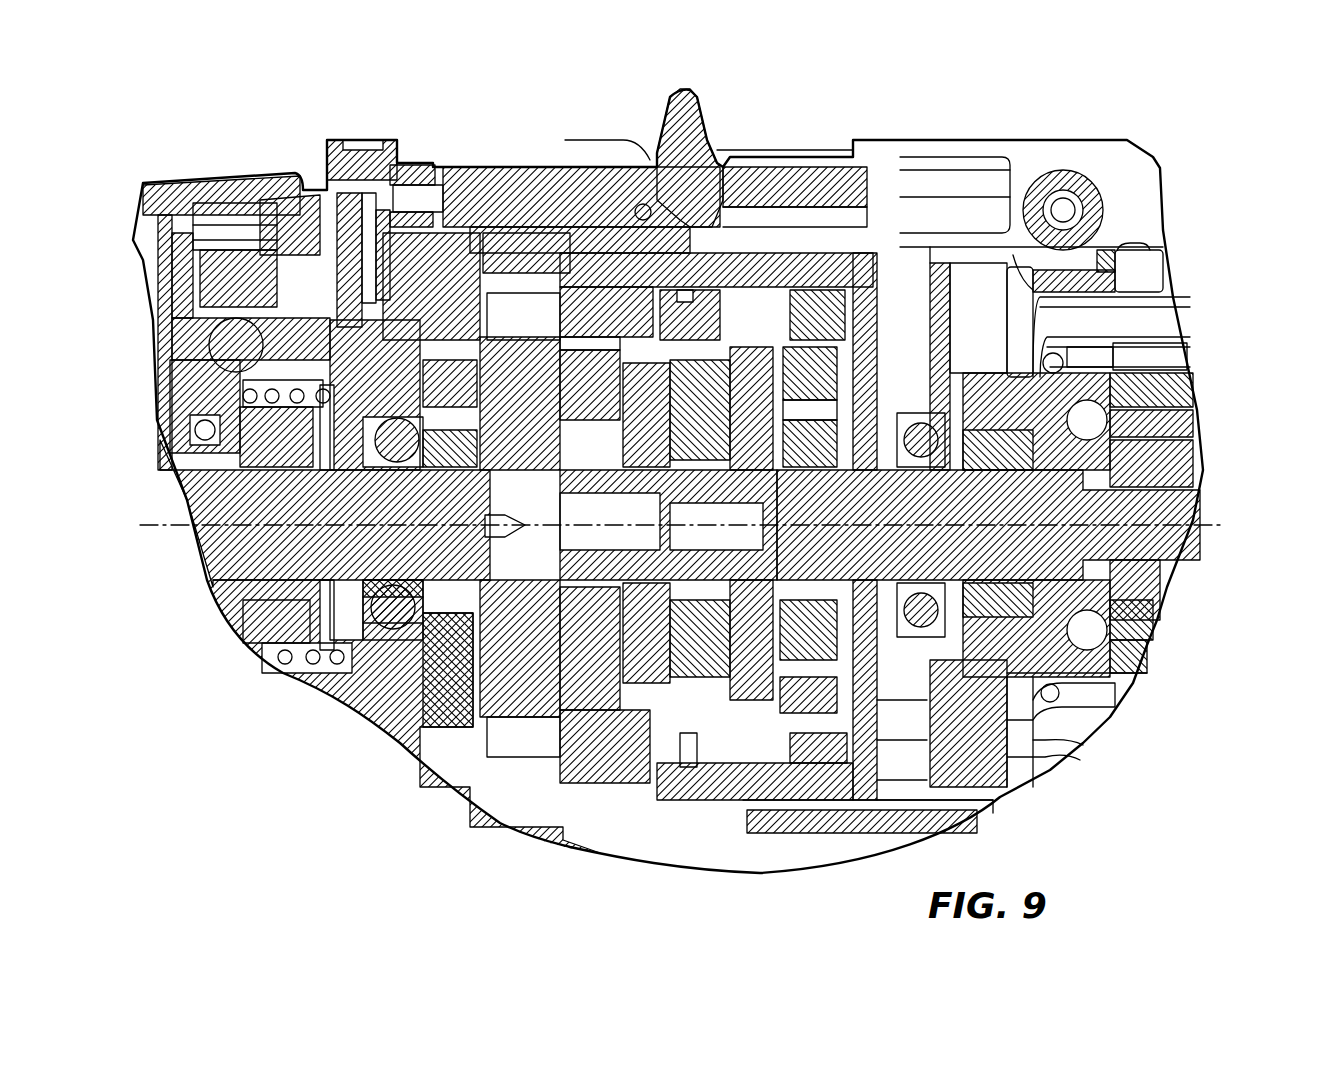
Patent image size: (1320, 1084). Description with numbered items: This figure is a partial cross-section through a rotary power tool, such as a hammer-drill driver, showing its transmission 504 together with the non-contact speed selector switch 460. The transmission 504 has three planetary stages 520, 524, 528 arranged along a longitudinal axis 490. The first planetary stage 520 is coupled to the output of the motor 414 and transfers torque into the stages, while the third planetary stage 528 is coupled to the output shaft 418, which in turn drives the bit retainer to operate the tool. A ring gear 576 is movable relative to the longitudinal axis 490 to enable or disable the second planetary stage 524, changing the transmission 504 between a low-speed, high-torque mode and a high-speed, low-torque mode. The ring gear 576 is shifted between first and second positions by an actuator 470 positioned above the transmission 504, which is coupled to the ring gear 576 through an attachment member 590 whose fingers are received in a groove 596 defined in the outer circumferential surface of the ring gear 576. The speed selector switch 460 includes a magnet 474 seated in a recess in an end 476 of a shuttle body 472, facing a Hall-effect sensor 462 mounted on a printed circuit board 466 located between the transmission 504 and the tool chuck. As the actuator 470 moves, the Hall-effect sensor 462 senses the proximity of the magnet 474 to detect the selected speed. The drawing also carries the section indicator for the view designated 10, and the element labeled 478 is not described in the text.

The section line for FIG. 10 is at (759, 73).
The motor 414 is at (1165, 505).
The output shaft 418 is at (277, 550).
The non-contact speed selector switch 460 is at (820, 138).
The Hall-effect sensor 462 is at (348, 172).
The printed circuit board 466 is at (240, 178).
The actuator 470 is at (670, 113).
The shuttle body 472 is at (600, 197).
The magnet 474 is at (423, 197).
The end 476 is at (372, 195).
The retaining ring 478 is at (500, 243).
The longitudinal axis 490 is at (1135, 545).
The transmission 504 is at (915, 225).
The first planetary stage 520 is at (740, 720).
The second planetary stage 524 is at (656, 705).
The third planetary stage 528 is at (548, 730).
The ring gear 576 is at (722, 317).
The attachment member 590 is at (680, 253).
The groove 596 is at (678, 750).